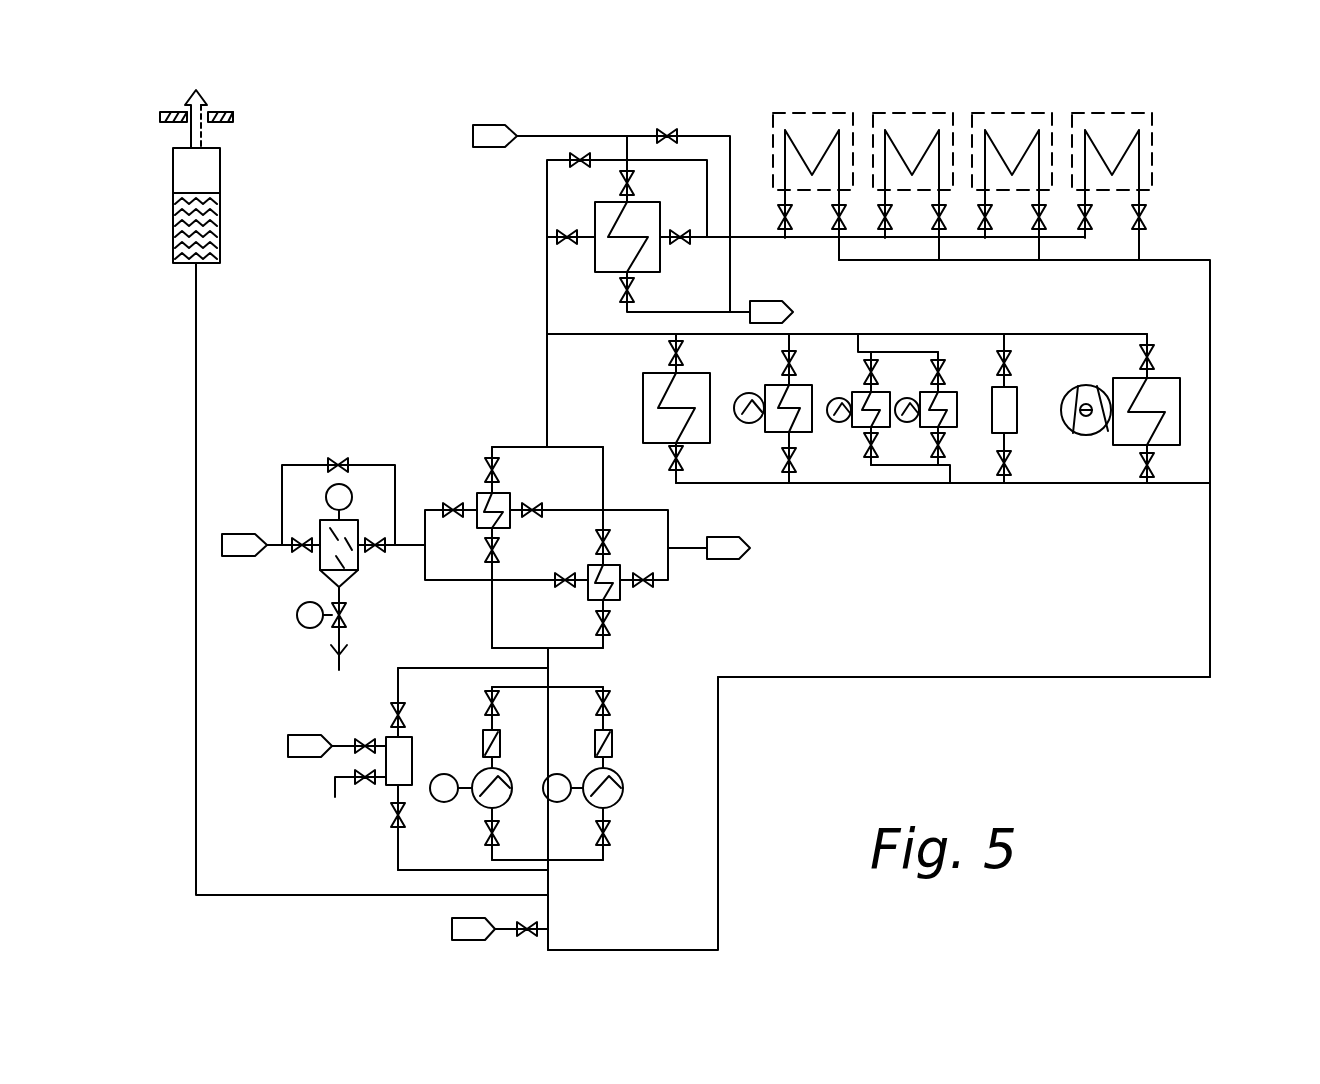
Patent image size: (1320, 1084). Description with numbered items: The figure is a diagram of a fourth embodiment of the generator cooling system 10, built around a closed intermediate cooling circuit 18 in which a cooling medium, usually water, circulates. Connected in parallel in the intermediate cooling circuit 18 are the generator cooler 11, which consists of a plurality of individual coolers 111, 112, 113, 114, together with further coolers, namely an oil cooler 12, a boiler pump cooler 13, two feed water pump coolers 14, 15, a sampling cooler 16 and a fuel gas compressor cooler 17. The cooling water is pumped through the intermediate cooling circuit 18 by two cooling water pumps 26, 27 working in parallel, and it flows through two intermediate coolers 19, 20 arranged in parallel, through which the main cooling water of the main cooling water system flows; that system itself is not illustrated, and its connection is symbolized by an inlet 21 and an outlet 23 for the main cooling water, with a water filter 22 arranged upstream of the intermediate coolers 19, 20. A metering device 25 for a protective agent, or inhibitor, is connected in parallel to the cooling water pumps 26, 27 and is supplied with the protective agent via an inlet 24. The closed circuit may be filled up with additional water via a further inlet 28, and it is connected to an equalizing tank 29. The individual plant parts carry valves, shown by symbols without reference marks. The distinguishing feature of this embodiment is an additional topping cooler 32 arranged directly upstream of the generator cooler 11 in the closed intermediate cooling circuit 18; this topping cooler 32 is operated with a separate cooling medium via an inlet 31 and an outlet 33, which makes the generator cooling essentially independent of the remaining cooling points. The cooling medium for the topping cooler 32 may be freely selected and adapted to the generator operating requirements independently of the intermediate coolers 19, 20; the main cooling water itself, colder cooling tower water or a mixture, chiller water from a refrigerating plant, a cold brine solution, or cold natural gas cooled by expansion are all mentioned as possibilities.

The generator cooling system 10 is at (410, 354).
The generator cooler 11 is at (979, 203).
The individual cooler 111 is at (773, 120).
The individual cooler 112 is at (930, 178).
The individual cooler 113 is at (1005, 178).
The individual cooler 114 is at (1152, 182).
The oil cooler 12 is at (648, 392).
The boiler pump cooler 13 is at (780, 425).
The feed water pump cooler 14 is at (880, 422).
The feed water pump cooler 15 is at (950, 425).
The sampling cooler 16 is at (1012, 422).
The fuel gas compressor cooler 17 is at (1170, 437).
The closed intermediate cooling circuit 18 is at (1077, 680).
The intermediate cooler 19 is at (477, 497).
The intermediate cooler 20 is at (613, 595).
The inlet 21 is at (244, 538).
The water filter 22 is at (346, 583).
The outlet 23 is at (725, 555).
The inlet 24 is at (305, 738).
The metering device 25 is at (392, 785).
The cooling water pump 26 is at (490, 790).
The cooling water pump 27 is at (612, 790).
The inlet 28 is at (450, 925).
The equalizing tank 29 is at (222, 220).
The inlet 31 is at (493, 148).
The topping cooler 32 is at (600, 262).
The outlet 33 is at (760, 293).